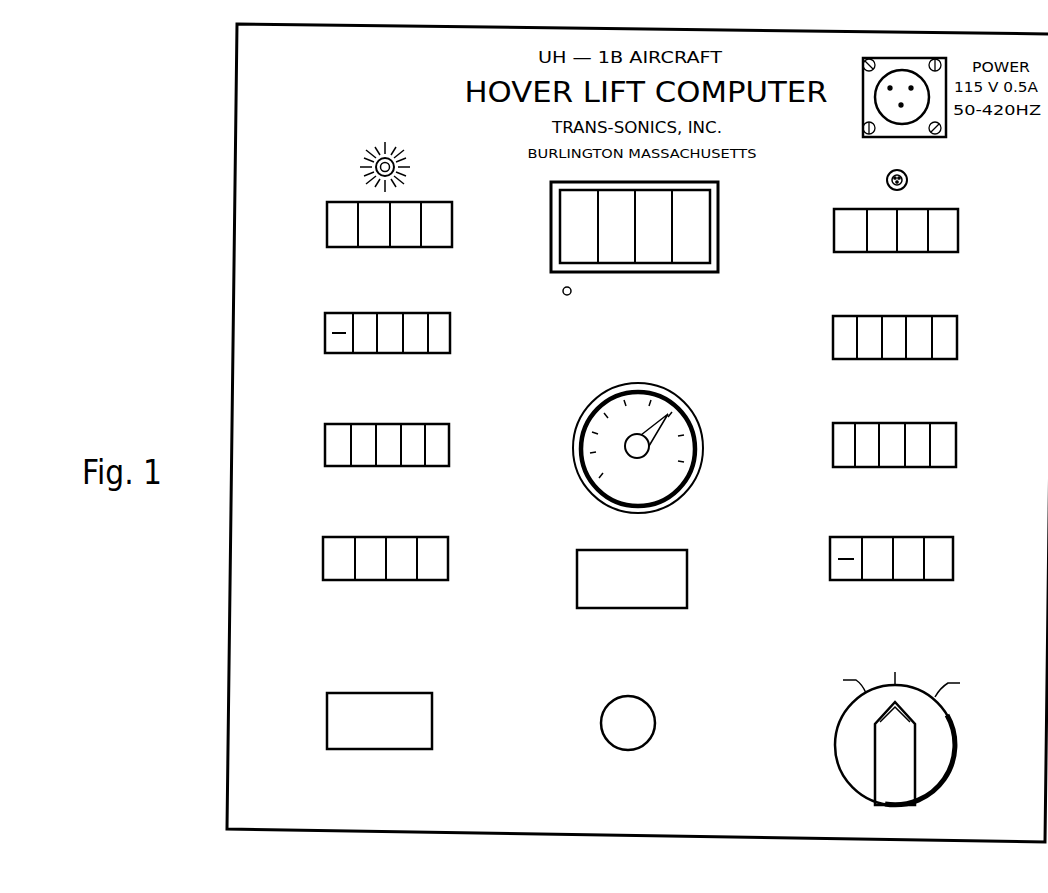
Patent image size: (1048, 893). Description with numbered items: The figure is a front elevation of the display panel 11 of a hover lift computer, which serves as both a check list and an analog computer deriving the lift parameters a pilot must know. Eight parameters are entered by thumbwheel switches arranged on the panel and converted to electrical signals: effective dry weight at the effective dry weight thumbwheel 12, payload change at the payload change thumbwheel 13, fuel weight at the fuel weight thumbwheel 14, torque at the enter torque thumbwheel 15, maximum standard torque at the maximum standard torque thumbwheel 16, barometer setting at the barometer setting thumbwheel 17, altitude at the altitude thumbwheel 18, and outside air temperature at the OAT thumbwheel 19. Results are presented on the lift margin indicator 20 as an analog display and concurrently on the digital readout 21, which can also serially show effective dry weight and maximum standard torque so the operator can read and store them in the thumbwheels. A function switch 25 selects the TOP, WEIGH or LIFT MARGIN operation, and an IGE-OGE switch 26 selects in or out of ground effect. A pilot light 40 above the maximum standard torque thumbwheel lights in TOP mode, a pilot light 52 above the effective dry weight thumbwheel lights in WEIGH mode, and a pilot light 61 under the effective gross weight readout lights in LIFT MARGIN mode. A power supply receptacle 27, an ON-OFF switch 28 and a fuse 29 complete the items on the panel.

The display panel 11 is at (242, 200).
The effective dry weight thumbwheel 12 is at (452, 222).
The payload change thumbwheel 13 is at (450, 333).
The fuel weight thumbwheel 14 is at (449, 445).
The enter torque thumbwheel 15 is at (448, 560).
The maximum standard torque thumbwheel 16 is at (958, 228).
The barometer setting thumbwheel 17 is at (957, 336).
The altitude thumbwheel 18 is at (956, 446).
The outside air temperature thumbwheel 19 is at (953, 558).
The lift margin indicator 20 is at (703, 465).
The digital readout 21 is at (718, 217).
The function switch 25 is at (953, 778).
The IGE-OGE switch 26 is at (687, 565).
The power supply receptacle 27 is at (880, 58).
The ON-OFF switch 28 is at (432, 710).
The fuse 29 is at (655, 738).
The pilot light 40 is at (910, 178).
The pilot light 52 is at (365, 163).
The pilot light 61 is at (563, 289).